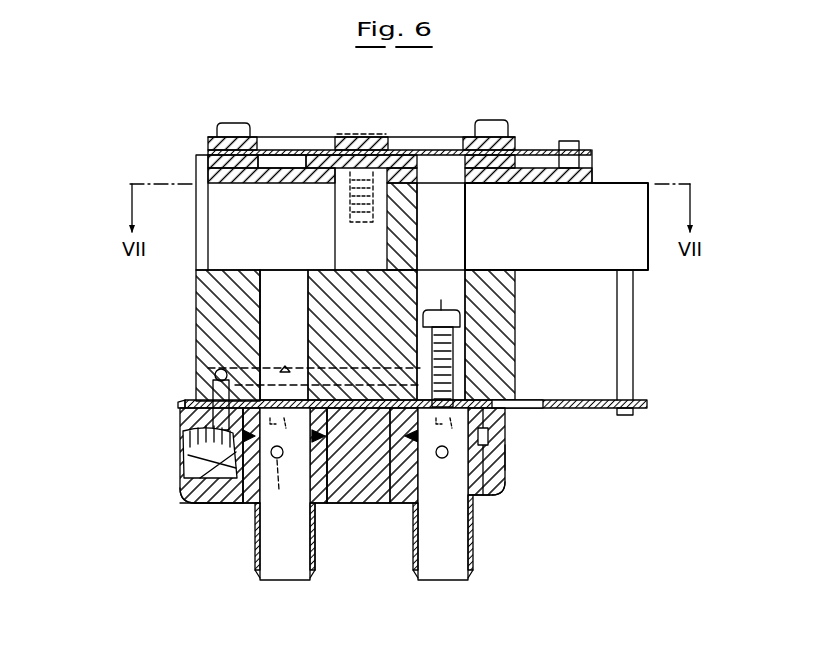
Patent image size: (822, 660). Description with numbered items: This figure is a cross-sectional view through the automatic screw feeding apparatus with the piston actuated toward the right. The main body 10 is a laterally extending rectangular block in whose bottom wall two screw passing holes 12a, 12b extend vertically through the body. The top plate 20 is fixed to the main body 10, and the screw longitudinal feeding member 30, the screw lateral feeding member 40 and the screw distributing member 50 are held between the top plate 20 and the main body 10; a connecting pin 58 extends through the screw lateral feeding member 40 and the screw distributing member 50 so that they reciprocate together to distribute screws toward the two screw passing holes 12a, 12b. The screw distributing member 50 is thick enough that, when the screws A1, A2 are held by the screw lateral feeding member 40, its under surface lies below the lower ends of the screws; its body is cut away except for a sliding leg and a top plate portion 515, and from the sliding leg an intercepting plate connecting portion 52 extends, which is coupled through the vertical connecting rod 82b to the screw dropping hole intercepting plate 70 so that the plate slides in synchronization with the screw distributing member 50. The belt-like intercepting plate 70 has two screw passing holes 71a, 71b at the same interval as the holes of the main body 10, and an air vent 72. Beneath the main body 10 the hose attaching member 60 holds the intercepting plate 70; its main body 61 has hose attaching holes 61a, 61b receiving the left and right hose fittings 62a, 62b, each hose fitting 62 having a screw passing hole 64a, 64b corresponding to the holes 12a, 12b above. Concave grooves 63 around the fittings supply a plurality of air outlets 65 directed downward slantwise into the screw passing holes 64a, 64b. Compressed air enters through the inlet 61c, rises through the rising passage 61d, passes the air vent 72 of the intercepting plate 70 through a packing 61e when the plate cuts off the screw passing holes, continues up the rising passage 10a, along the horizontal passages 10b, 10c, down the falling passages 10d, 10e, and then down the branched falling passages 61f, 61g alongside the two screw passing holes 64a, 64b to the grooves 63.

The main body 10 is at (194, 303).
The rising passage 10a is at (214, 395).
The horizontal passage 10b is at (216, 370).
The horizontal passage 10c is at (304, 362).
The falling passage 10d is at (350, 500).
The falling passage 10e is at (462, 388).
The screw passing hole 12a is at (262, 284).
The screw passing hole 12b is at (512, 281).
The top plate 20 is at (243, 133).
The screw longitudinal feeding member 30 is at (206, 162).
The screw lateral feeding member 40 is at (206, 150).
The screw distributing member 50 is at (232, 204).
The intercepting plate connecting portion 52 is at (628, 182).
The connecting pin 58 is at (576, 124).
The top plate portion 515 is at (592, 170).
The hose attaching member 60 is at (508, 492).
The main body of hose attaching member 61 is at (485, 443).
The hose attaching hole 61a is at (316, 515).
The hose attaching hole 61b is at (503, 496).
The inlet 61c is at (182, 488).
The rising passage 61d is at (186, 473).
The packing 61e is at (210, 482).
The falling passage 61f is at (284, 488).
The falling passage 61g is at (496, 460).
The hose fitting 62 is at (410, 562).
The hose fitting 62a is at (253, 488).
The hose fitting 62b is at (480, 500).
The concave groove 63 is at (489, 433).
The screw passing hole 64a is at (262, 578).
The screw passing hole 64b is at (452, 576).
The air outlet 65 is at (335, 500).
The screw dropping hole intercepting plate 70 is at (597, 410).
The screw passing hole 71a is at (372, 398).
The screw passing hole 71b is at (527, 400).
The air vent 72 is at (186, 403).
The vertical connecting rod 82b is at (636, 338).
The screw A1 is at (444, 310).
The screw A2 is at (329, 148).